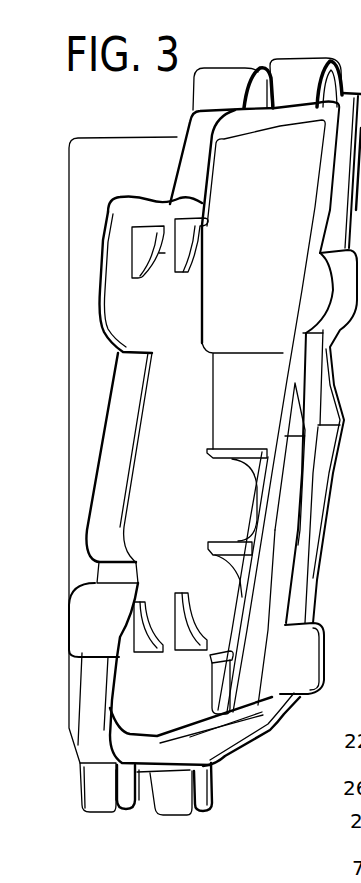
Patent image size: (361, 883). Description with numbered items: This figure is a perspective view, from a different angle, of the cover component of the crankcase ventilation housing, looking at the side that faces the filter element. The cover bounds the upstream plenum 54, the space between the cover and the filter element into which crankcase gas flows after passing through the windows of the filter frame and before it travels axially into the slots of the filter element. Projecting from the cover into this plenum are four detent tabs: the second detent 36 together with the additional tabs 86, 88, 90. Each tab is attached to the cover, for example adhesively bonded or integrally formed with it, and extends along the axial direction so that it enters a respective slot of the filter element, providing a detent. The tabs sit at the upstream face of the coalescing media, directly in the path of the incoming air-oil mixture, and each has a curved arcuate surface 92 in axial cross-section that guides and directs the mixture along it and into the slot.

The second detent 36 is at (133, 242).
The upstream plenum 54 is at (203, 515).
The tab 86 is at (187, 230).
The tab 88 is at (134, 640).
The tab 90 is at (187, 652).
The curved arcuate surface 92 is at (160, 256).